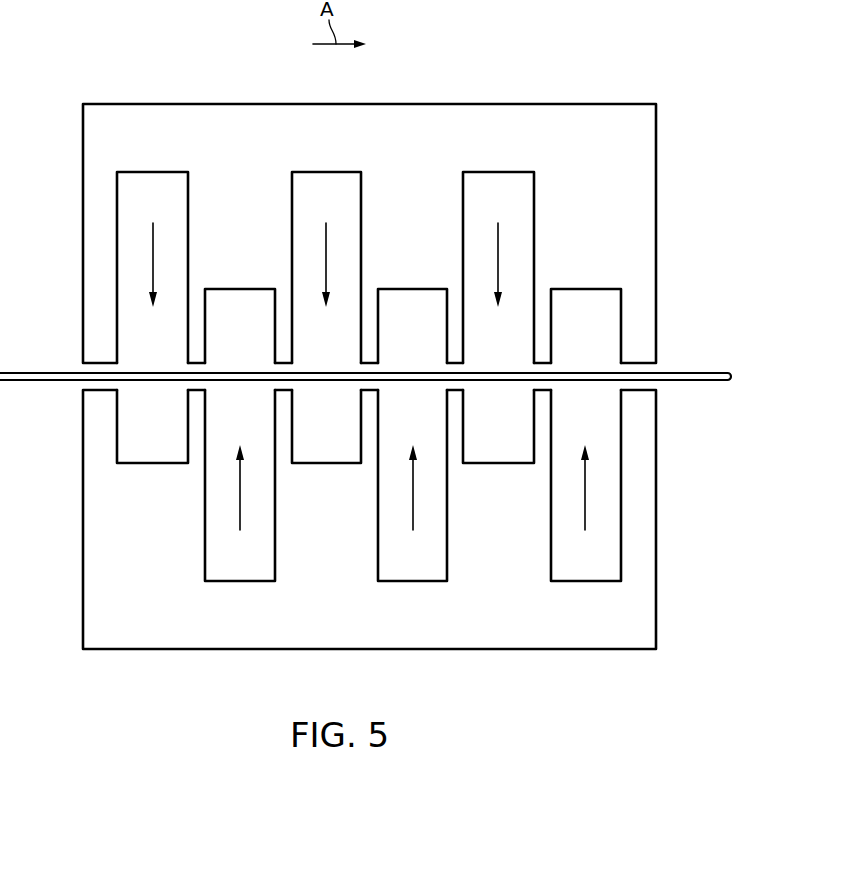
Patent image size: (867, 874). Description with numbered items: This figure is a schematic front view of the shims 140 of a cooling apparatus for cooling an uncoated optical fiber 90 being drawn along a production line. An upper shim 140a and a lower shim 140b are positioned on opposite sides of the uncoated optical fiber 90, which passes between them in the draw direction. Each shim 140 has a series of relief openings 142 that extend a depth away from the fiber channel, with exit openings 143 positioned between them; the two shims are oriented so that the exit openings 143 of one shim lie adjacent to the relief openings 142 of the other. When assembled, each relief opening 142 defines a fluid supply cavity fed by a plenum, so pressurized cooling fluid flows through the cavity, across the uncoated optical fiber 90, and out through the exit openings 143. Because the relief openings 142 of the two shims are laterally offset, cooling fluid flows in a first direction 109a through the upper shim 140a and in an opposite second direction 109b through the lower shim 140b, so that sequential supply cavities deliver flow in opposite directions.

The uncoated optical fiber 90 is at (705, 373).
The first direction 109a is at (153, 240).
The second direction 109b is at (240, 517).
The shims 140 is at (666, 206).
The upper shim 140a is at (656, 129).
The lower shim 140b is at (656, 621).
The relief openings 142 is at (188, 191).
The exit openings 143 is at (241, 289).